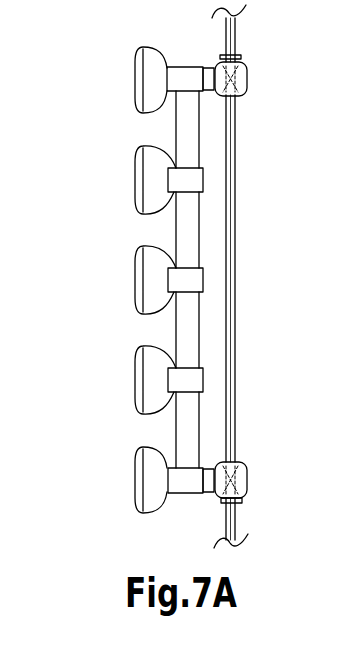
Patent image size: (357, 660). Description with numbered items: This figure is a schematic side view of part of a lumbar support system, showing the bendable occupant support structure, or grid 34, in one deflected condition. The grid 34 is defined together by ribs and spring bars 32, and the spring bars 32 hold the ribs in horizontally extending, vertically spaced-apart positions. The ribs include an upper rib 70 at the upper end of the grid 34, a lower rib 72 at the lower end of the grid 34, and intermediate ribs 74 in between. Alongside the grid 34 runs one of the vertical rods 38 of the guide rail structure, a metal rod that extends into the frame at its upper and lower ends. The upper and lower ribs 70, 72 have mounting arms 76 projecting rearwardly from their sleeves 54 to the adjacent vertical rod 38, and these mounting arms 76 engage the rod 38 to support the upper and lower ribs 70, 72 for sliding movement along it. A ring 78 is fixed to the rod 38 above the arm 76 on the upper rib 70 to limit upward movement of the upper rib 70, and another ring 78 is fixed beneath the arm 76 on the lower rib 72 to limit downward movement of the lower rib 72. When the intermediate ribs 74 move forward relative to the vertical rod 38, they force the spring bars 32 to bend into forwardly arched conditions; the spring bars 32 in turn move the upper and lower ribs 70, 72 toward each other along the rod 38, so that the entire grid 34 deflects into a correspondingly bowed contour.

The spring bar 32 is at (188, 134).
The grid 34 is at (104, 195).
The vertical rod 38 is at (235, 33).
The sleeve 54 is at (205, 182).
The upper rib 70 is at (155, 50).
The lower rib 72 is at (150, 513).
The intermediate rib 74 is at (135, 195).
The mounting arm 76 is at (247, 95).
The ring 78 is at (222, 58).